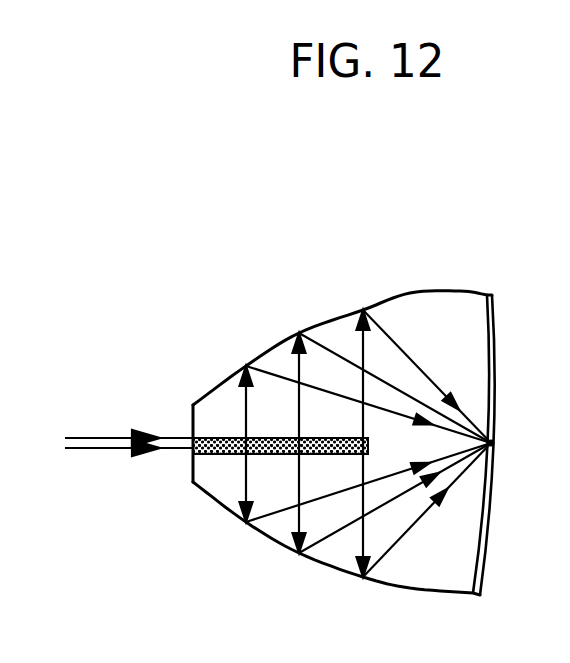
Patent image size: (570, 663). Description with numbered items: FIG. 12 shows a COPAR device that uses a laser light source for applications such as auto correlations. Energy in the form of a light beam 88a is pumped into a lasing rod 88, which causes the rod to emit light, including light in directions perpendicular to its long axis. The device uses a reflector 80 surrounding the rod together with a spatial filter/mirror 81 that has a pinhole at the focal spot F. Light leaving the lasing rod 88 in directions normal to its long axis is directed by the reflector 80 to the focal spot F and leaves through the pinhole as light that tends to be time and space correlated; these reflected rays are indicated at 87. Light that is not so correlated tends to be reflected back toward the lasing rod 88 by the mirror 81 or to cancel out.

The reflector 80 is at (320, 566).
The spatial filter/mirror 81 is at (495, 347).
The light rays 87 is at (370, 450).
The lasing rod 88 is at (277, 455).
The light beam 88a is at (88, 426).
The focal spot F is at (496, 446).